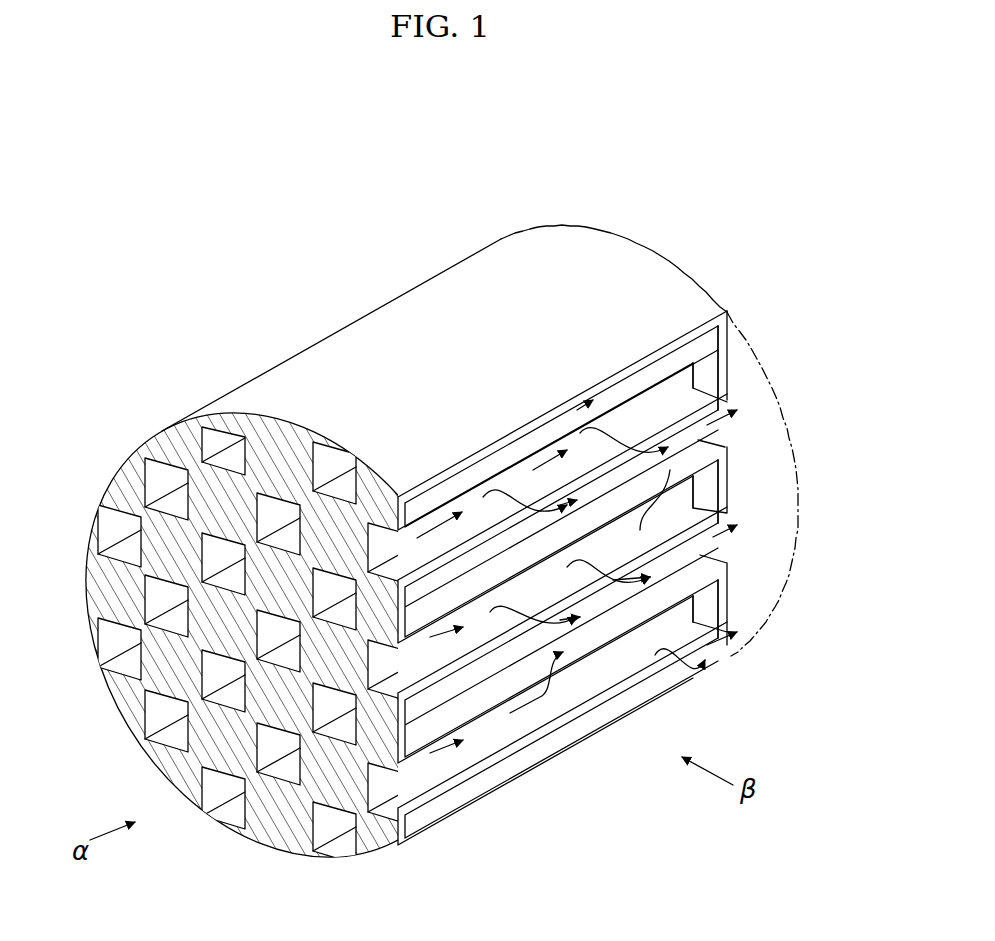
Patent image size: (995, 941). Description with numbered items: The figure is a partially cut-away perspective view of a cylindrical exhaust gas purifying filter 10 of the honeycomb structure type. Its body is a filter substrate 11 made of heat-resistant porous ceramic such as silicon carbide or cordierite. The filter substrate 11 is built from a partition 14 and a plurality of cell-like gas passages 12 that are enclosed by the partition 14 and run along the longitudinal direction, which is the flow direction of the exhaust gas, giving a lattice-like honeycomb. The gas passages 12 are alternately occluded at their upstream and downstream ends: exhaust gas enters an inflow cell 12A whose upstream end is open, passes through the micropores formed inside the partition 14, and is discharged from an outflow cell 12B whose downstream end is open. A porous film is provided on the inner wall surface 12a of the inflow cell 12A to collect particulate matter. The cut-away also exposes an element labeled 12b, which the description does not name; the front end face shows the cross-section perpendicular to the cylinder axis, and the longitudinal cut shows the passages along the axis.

The exhaust gas purifying filter 10 is at (778, 262).
The filter substrate 11 is at (352, 353).
The gas passage 12 is at (160, 478).
The inflow cell 12A is at (633, 410).
The outflow cell 12B is at (463, 570).
The inner wall surface 12a is at (683, 378).
The plugged end of cell 12b is at (592, 630).
The partition 14 is at (168, 440).